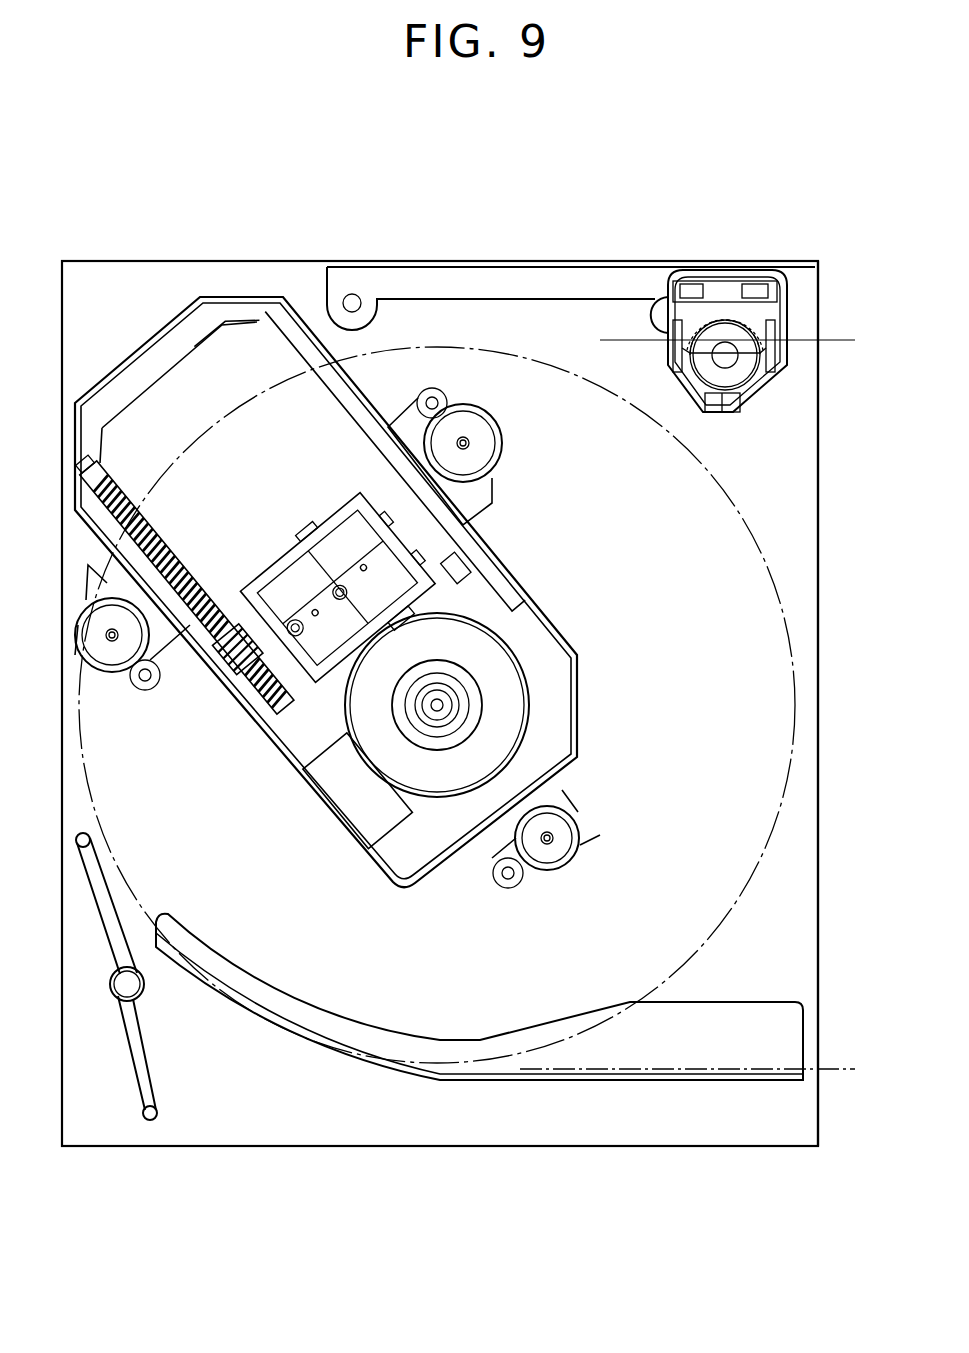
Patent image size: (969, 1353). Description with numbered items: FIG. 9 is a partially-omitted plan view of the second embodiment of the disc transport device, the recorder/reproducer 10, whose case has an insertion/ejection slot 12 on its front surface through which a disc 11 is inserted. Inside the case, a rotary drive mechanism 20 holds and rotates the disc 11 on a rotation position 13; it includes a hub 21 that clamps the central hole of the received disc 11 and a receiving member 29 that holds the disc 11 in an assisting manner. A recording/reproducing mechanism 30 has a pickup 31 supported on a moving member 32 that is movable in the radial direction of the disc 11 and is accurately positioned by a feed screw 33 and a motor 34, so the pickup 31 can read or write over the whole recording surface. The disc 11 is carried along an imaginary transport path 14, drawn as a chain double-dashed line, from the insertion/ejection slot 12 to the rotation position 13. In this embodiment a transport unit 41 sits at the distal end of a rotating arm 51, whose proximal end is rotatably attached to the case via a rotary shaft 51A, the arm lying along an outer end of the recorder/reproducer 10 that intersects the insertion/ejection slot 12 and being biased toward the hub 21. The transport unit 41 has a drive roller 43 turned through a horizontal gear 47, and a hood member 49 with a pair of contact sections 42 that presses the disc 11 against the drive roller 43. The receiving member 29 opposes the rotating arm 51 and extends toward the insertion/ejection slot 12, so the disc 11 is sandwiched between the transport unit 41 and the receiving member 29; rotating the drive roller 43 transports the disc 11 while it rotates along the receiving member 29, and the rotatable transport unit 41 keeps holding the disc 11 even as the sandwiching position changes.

The recorder/reproducer 10 is at (139, 256).
The disc 11 is at (437, 781).
The rotation position 13 is at (553, 1050).
The insertion/ejection slot 12 is at (818, 890).
The transport path 14 is at (840, 1074).
The rotary drive mechanism 20 is at (326, 636).
The hub 21 is at (403, 763).
The receiving member 29 is at (393, 1082).
The recording/reproducing mechanism 30 is at (313, 490).
The pickup 31 is at (341, 586).
The moving member 32 is at (317, 610).
The feed screw 33 is at (184, 583).
The motor 34 is at (318, 568).
The transport unit 41 is at (739, 319).
The contact sections 42 is at (780, 333).
The drive roller 43 is at (747, 362).
The horizontal gear 47 is at (658, 312).
The hood member 49 is at (725, 392).
The rotating arm 51 is at (571, 261).
The rotary shaft 51A is at (350, 283).